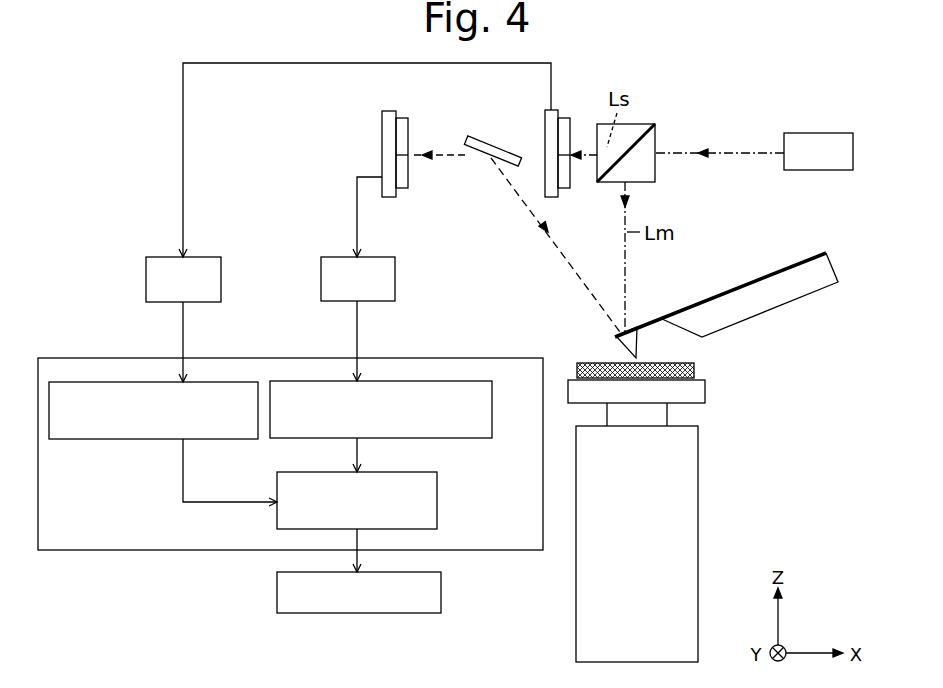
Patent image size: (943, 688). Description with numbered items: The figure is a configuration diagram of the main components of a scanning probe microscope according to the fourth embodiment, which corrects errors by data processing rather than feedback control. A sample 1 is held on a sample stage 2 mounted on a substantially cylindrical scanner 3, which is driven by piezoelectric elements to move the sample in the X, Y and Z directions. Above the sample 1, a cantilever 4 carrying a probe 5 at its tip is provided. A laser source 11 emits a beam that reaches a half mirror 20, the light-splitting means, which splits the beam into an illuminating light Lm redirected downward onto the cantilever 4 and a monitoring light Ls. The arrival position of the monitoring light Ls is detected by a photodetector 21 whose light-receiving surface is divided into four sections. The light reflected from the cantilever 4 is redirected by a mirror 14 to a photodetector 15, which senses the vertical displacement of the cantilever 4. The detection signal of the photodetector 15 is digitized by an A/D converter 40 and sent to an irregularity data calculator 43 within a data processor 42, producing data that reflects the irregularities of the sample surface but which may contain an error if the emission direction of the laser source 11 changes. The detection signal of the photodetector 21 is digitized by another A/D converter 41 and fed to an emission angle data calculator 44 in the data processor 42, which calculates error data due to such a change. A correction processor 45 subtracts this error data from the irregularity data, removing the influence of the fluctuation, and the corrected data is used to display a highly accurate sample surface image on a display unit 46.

The sample 1 is at (695, 370).
The sample stage 2 is at (707, 393).
The scanner 3 is at (695, 525).
The cantilever 4 is at (648, 323).
The probe 5 is at (622, 347).
The laser source 11 is at (827, 133).
The mirror 14 is at (482, 140).
The photodetector 15 is at (408, 127).
The half mirror 20 is at (656, 124).
The photodetector 21 is at (572, 120).
The A/D converter 40 is at (397, 262).
The A/D converter 41 is at (222, 263).
The data processor 42 is at (107, 357).
The irregularity data calculator 43 is at (495, 420).
The emission angle data calculator 44 is at (143, 440).
The correction processor 45 is at (440, 508).
The display unit 46 is at (442, 593).